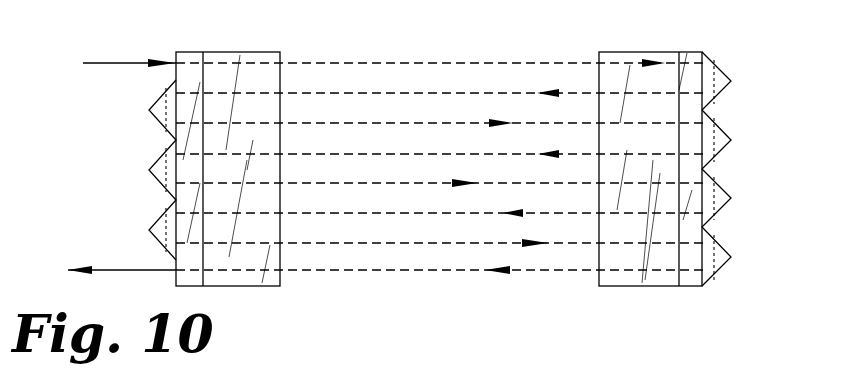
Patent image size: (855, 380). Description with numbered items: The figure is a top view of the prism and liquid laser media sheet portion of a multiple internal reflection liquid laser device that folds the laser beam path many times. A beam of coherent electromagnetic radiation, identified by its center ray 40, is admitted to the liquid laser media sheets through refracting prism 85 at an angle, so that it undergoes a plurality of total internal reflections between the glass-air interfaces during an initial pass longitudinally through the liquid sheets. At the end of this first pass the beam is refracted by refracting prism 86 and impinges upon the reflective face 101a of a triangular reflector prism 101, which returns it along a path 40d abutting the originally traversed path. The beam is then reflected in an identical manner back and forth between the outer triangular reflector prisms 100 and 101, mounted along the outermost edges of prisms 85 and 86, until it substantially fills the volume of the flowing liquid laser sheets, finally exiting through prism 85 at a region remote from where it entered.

The center ray 40 is at (98, 65).
The path 40d is at (585, 93).
The refracting prism 85 is at (245, 52).
The refracting prism 86 is at (663, 52).
The triangular reflector prisms 100 is at (164, 247).
The triangular reflector prisms 101 is at (722, 268).
The reflective face 101a is at (735, 76).